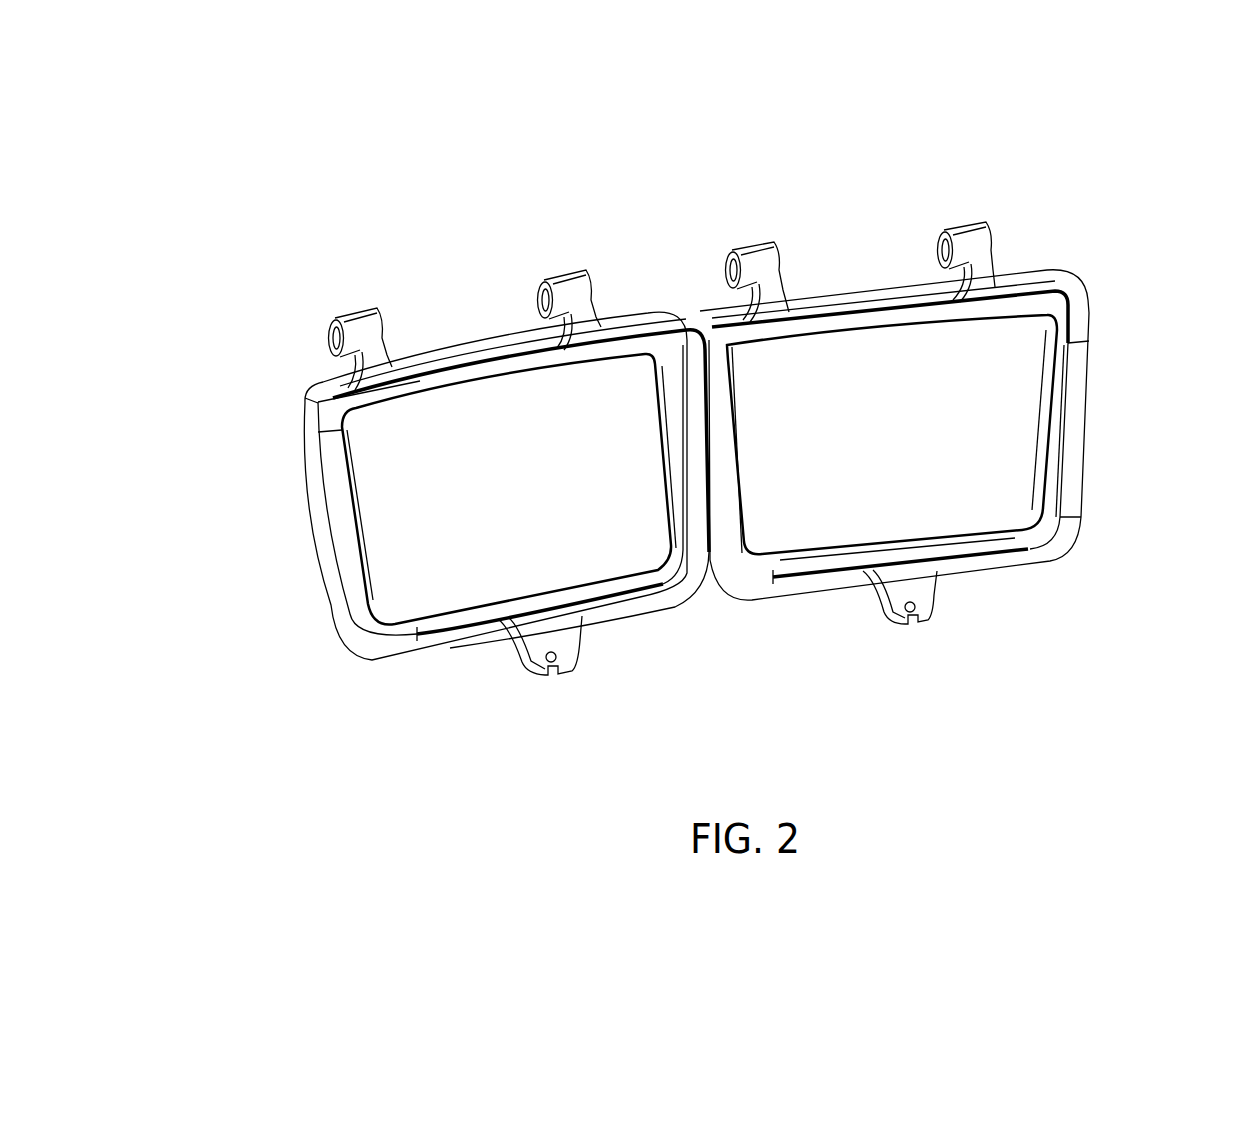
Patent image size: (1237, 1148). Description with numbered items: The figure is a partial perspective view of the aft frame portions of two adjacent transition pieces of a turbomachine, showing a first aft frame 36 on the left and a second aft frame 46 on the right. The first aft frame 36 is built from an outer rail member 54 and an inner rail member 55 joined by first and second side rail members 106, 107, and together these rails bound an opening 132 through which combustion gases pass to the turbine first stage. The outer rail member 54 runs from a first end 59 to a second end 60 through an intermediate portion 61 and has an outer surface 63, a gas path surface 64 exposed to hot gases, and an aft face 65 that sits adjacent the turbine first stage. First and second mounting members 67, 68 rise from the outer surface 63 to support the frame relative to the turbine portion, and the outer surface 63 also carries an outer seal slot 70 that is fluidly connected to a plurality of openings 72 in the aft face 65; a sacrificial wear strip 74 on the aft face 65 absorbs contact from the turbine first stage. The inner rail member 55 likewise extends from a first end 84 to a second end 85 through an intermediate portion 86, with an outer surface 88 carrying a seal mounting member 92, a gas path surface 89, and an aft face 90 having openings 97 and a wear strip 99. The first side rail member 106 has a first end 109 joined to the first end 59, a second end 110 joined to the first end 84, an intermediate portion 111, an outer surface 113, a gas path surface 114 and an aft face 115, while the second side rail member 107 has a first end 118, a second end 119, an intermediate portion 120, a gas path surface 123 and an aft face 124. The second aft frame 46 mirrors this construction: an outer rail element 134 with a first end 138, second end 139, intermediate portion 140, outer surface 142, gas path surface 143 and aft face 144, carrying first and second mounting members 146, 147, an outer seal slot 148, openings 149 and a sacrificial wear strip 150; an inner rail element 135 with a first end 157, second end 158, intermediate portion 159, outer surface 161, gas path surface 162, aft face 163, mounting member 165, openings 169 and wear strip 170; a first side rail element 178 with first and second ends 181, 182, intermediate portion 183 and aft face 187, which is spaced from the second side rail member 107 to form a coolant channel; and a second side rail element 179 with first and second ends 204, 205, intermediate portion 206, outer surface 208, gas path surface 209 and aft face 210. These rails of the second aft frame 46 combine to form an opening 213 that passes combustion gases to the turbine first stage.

The first aft frame 36 is at (360, 654).
The second aft frame 46 is at (1123, 597).
The outer rail member 54 is at (453, 347).
The inner rail member 55 is at (421, 668).
The first end 59 is at (322, 383).
The second end 60 is at (645, 316).
The intermediate portion 61 is at (405, 360).
The outer surface 63 is at (473, 342).
The gas path surface 64 is at (425, 396).
The aft face 65 is at (473, 374).
The first mounting member 67 is at (358, 315).
The second mounting member 68 is at (568, 282).
The outer seal slot 70 is at (526, 331).
The openings 72 is at (363, 411).
The sacrificial wear strip 74 is at (304, 400).
The first end 84 is at (413, 660).
The second end 85 is at (712, 613).
The intermediate portion 86 is at (443, 652).
The outer surface 88 is at (460, 642).
The gas path surface 89 is at (520, 600).
The aft face 90 is at (646, 590).
The seal mounting member 92 is at (557, 640).
The openings 97 is at (402, 632).
The wear strip 99 is at (385, 645).
The first side rail member 106 is at (293, 477).
The second side rail member 107 is at (637, 447).
The first end 109 is at (333, 450).
The second end 110 is at (363, 607).
The intermediate portion 111 is at (321, 503).
The outer surface 113 is at (311, 463).
The gas path surface 114 is at (362, 508).
The aft face 115 is at (353, 557).
The first end 118 is at (668, 390).
The second end 119 is at (719, 585).
The intermediate portion 120 is at (667, 455).
The gas path surface 123 is at (668, 417).
The aft face 124 is at (698, 330).
The opening 132 is at (416, 576).
The outer rail element 134 is at (865, 268).
The inner rail element 135 is at (963, 603).
The first end 138 is at (703, 345).
The second end 139 is at (1040, 280).
The intermediate portion 140 is at (800, 297).
The outer surface 142 is at (907, 290).
The gas path surface 143 is at (753, 347).
The aft face 144 is at (873, 317).
The first mounting member 146 is at (752, 258).
The second mounting member 147 is at (960, 235).
The outer seal slot 148 is at (850, 302).
The openings 149 is at (817, 343).
The sacrificial wear strip 150 is at (1045, 303).
The first end 157 is at (740, 590).
The second end 158 is at (1042, 563).
The intermediate portion 159 is at (987, 572).
The outer surface 161 is at (823, 585).
The gas path surface 162 is at (815, 557).
The aft face 163 is at (967, 540).
The mounting member 165 is at (922, 624).
The openings 169 is at (1037, 548).
The wear strip 170 is at (1046, 556).
The first side rail element 178 is at (749, 509).
The second side rail element 179 is at (1027, 447).
The first end 181 is at (717, 390).
The second end 182 is at (767, 587).
The intermediate portion 183 is at (728, 457).
The aft face 187 is at (722, 490).
The first end 204 is at (1080, 330).
The second end 205 is at (1068, 523).
The intermediate portion 206 is at (1083, 417).
The outer surface 208 is at (1083, 467).
The gas path surface 209 is at (1043, 413).
The aft face 210 is at (1080, 367).
The opening 213 is at (985, 488).